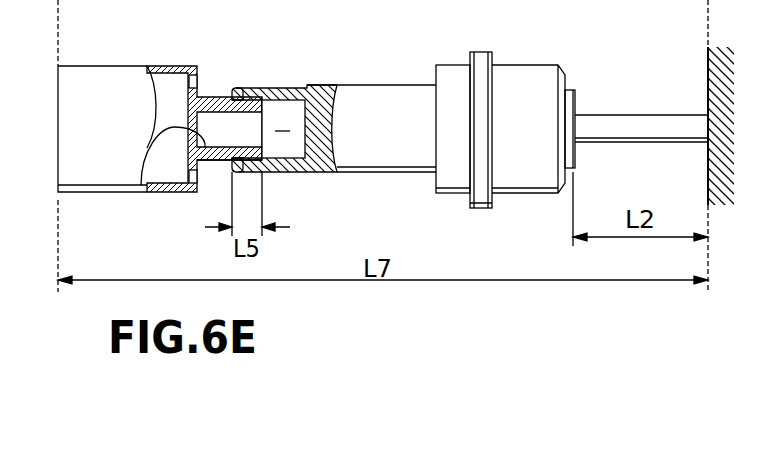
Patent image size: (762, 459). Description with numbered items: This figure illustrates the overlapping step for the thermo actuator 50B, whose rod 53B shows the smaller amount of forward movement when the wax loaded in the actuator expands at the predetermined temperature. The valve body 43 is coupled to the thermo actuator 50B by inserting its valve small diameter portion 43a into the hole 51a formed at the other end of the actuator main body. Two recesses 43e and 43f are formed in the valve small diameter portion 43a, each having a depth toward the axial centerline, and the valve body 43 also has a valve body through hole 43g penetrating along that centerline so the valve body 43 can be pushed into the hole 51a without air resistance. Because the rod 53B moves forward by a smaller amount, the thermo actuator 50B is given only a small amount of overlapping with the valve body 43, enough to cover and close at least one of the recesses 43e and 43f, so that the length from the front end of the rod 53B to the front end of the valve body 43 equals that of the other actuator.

The valve body 43 is at (110, 65).
The valve small diameter portion 43a is at (258, 90).
The recess 43e is at (216, 162).
The recess 43f is at (240, 88).
The valve body through hole 43g is at (147, 148).
The thermo actuator 50B is at (363, 85).
The hole 51a is at (283, 132).
The rod 53B is at (638, 127).